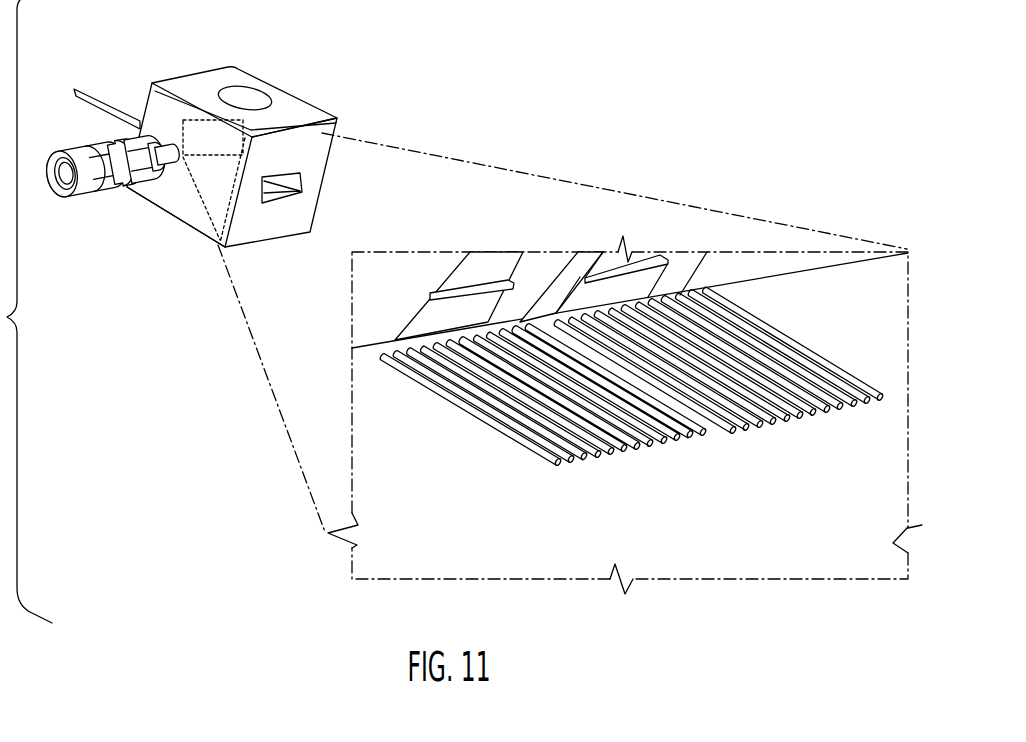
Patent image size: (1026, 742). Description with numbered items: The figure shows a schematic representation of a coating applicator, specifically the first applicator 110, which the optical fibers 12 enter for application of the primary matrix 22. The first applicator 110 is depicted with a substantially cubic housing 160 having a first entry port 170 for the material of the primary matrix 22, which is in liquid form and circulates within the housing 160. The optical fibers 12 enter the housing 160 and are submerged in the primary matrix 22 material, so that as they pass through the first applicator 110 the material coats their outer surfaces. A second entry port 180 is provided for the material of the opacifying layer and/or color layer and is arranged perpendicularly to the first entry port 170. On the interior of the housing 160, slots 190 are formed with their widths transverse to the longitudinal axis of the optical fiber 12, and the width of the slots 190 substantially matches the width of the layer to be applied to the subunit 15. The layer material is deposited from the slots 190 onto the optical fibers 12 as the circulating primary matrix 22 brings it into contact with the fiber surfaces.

The optical fibers 12 is at (109, 88).
The subunit 15 is at (280, 201).
The primary matrix 22 is at (480, 567).
The first applicator 110 is at (252, 132).
The housing 160 is at (170, 224).
The first entry port 170 is at (250, 99).
The second entry port 180 is at (93, 193).
The slots 190 is at (500, 282).